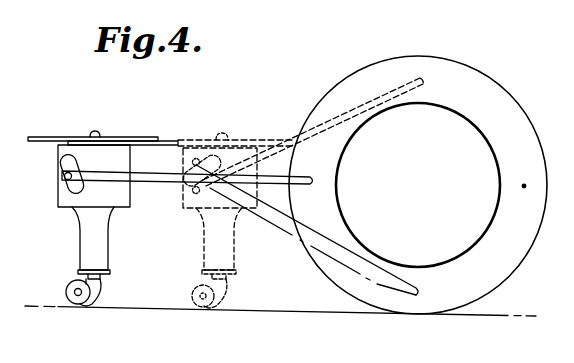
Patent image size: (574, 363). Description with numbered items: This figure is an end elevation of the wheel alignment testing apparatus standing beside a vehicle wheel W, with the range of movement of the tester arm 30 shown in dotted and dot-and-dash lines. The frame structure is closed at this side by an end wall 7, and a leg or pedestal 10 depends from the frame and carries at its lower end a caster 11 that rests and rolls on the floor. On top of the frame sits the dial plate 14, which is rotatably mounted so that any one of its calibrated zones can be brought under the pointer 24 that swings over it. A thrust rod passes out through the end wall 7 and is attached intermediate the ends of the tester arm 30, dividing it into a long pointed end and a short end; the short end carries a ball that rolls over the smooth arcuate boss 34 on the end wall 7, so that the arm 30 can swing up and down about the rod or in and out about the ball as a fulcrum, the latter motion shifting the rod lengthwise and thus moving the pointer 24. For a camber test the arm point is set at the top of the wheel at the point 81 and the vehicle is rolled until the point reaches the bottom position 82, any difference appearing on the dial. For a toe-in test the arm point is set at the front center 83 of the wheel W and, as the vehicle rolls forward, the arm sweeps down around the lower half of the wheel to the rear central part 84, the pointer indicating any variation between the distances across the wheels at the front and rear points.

The wheel W is at (500, 86).
The tester arm 30 is at (335, 126).
The dial plate 14 is at (40, 136).
The pointer 24 is at (144, 136).
The leg or pedestal 10 is at (83, 257).
The caster 11 is at (68, 297).
The arcuate boss 34 is at (62, 196).
The end wall 7 is at (111, 244).
The front center point of wheel 83 is at (314, 183).
The top point of wheel 81 is at (423, 80).
The bottom position of wheel 82 is at (421, 289).
The rear central part of wheel 84 is at (519, 190).